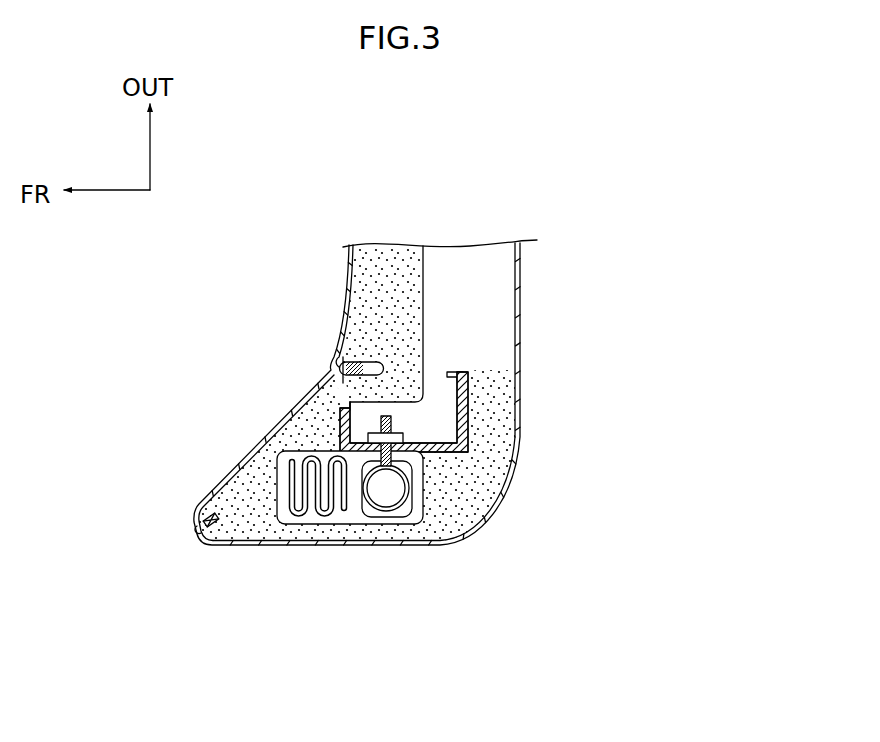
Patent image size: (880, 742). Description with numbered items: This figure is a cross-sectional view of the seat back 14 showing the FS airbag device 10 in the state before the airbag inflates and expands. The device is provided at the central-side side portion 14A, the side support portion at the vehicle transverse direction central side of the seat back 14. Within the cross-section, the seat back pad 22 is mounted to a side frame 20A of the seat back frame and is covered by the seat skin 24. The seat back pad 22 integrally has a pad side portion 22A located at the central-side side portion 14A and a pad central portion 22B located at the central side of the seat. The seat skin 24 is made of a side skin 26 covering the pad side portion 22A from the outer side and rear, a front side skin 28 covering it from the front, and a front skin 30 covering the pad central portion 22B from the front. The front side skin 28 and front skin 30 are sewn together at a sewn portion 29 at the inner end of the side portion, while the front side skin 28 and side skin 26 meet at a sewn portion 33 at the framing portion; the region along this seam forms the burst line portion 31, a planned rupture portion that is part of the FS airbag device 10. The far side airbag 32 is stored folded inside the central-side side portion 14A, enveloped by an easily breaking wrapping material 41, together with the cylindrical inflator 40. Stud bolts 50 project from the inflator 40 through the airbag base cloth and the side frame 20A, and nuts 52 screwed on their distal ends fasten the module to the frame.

The FS airbag device 10 is at (157, 487).
The seat back 14 is at (340, 266).
The central-side side portion 14A is at (247, 560).
The side frame 20A is at (455, 373).
The seat back pad 22 is at (427, 270).
The pad side portion 22A is at (280, 413).
The pad central portion 22B is at (402, 318).
The seat skin 24 is at (248, 442).
The side skin 26 is at (380, 547).
The front side skin 28 is at (240, 458).
The sewn portion 29 is at (333, 358).
The front skin 30 is at (345, 288).
The burst line portion 31 is at (187, 524).
The far side airbag 32 is at (312, 524).
The sewn portion 33 is at (200, 537).
The inflator 40 is at (397, 512).
The wrapping material 41 is at (347, 526).
The stud bolt 50 is at (395, 425).
The nut 52 is at (402, 442).